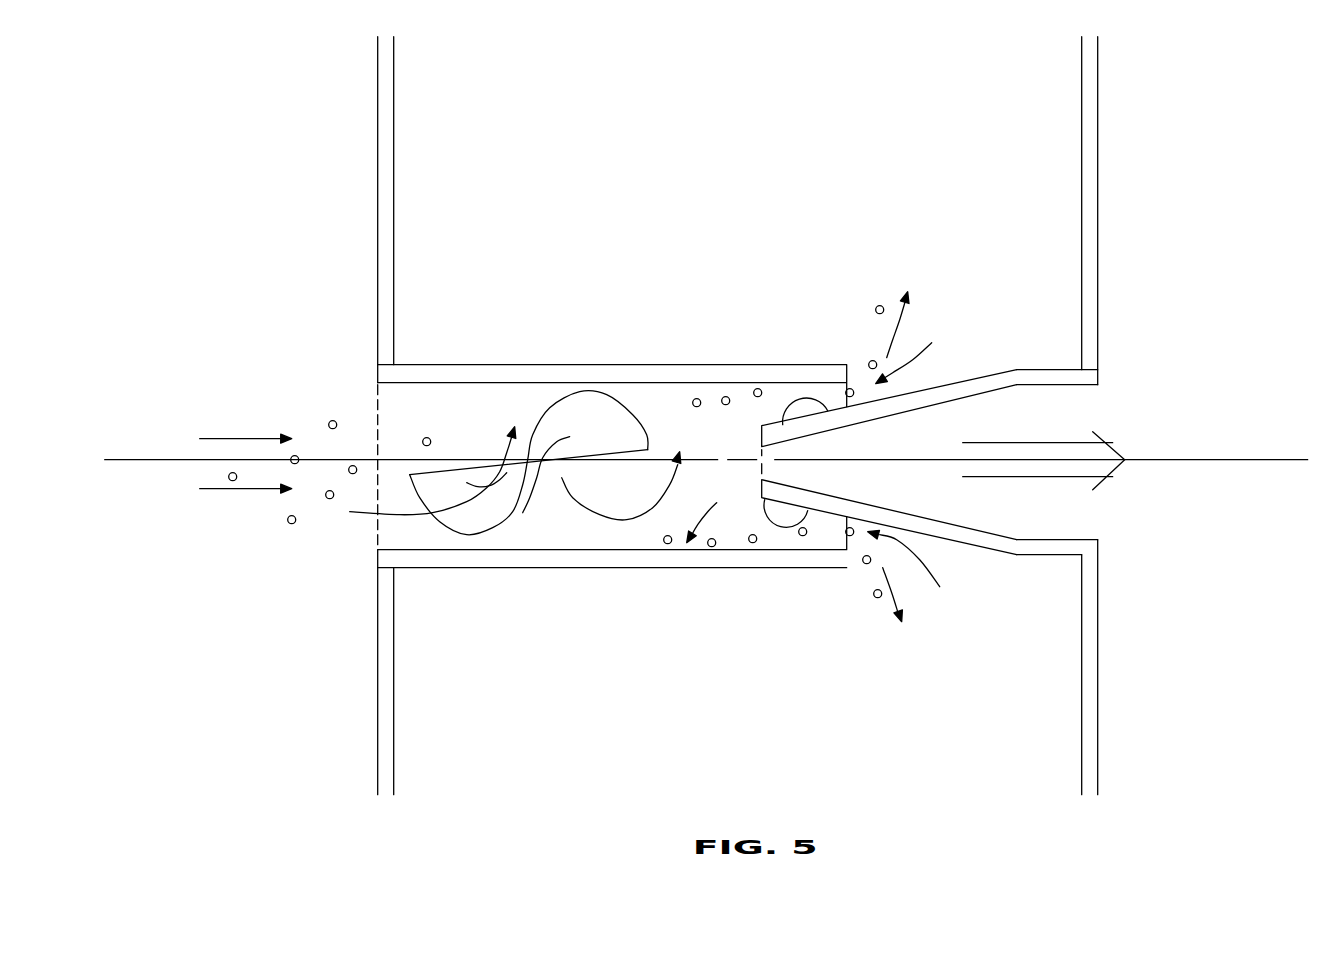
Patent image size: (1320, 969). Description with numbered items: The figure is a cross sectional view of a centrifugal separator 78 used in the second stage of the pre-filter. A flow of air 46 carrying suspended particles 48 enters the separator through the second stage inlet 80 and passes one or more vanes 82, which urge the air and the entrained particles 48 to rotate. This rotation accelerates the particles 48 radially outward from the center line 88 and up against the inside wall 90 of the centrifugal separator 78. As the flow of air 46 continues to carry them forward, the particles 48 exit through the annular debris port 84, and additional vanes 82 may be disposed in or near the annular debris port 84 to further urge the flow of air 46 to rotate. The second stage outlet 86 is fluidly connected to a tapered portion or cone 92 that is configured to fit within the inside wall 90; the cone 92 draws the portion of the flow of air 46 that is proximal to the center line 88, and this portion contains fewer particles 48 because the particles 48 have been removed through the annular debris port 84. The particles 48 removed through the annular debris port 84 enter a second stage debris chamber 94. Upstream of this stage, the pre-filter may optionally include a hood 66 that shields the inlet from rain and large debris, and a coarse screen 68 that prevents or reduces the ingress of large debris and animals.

The flow of air 46 is at (222, 437).
The particles 48 is at (292, 526).
The hood 66 is at (1120, 470).
The coarse screen 68 is at (872, 598).
The centrifugal separator 78 is at (563, 293).
The second stage inlet 80 is at (361, 401).
The vanes 82 is at (795, 398).
The annular debris port 84 is at (914, 454).
The second stage outlet 86 is at (1112, 401).
The center line 88 is at (1237, 460).
The inside wall 90 is at (715, 514).
The cone 92 is at (1017, 370).
The second stage debris chamber 94 is at (1028, 690).